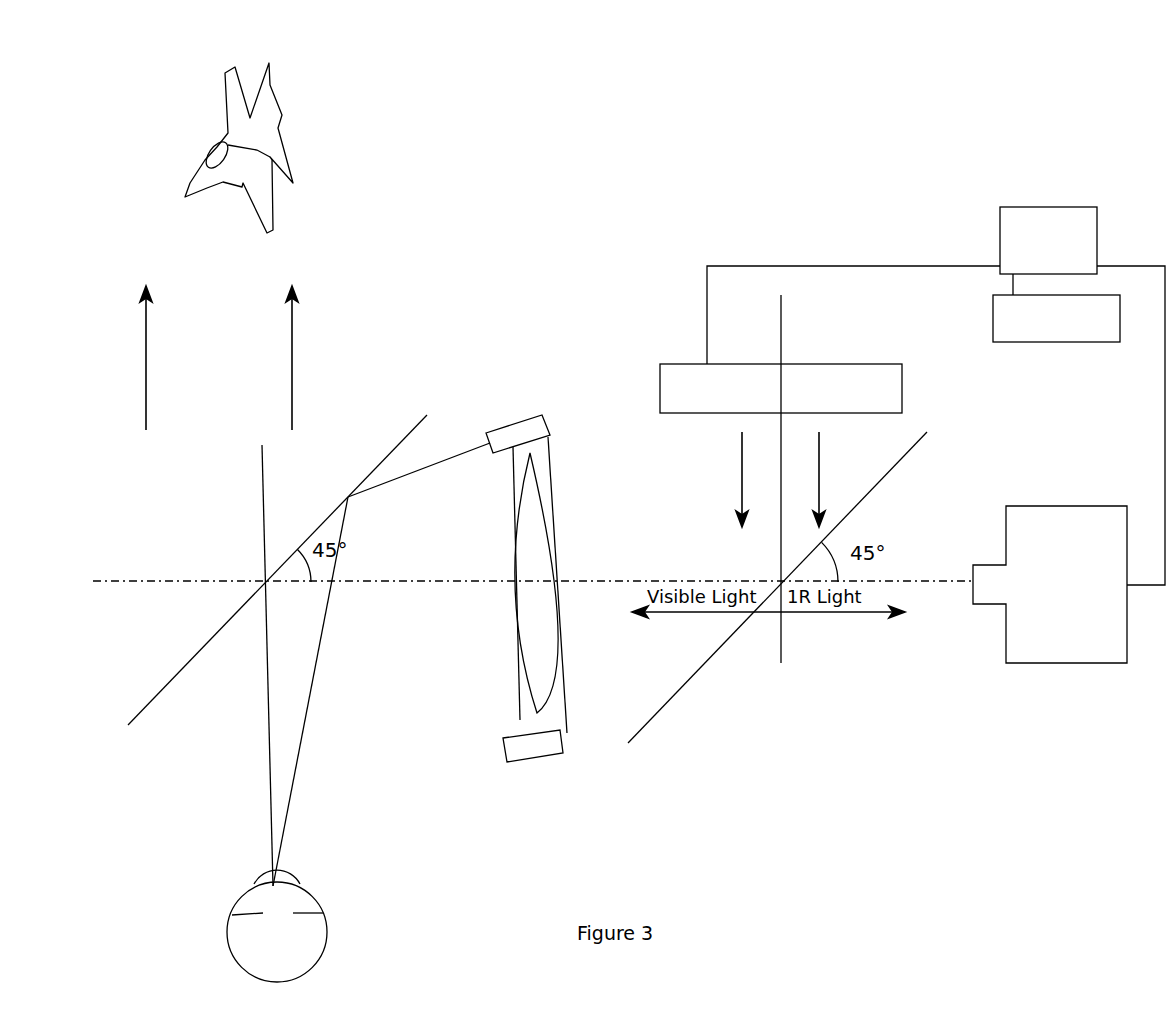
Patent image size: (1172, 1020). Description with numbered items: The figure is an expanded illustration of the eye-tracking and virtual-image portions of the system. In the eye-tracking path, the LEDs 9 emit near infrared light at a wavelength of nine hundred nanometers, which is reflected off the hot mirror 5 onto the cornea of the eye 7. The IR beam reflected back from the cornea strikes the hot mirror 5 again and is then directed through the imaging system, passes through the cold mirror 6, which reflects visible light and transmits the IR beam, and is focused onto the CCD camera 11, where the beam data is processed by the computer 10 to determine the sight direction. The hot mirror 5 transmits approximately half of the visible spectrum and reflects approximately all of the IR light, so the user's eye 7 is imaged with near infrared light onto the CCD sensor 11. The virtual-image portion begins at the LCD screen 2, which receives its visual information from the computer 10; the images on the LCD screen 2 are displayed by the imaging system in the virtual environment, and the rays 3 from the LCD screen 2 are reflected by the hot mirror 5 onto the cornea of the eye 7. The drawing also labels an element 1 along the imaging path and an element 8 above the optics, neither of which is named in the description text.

The lens 1 is at (558, 640).
The LCD screen 2 is at (897, 365).
The rays 3 is at (820, 475).
The hot mirror 5 is at (313, 533).
The cold mirror 6 is at (875, 490).
The eye 7 is at (322, 903).
The target object (aircraft) 8 is at (277, 117).
The LEDs 9 is at (547, 425).
The computer 10 is at (1048, 240).
The CCD camera 11 is at (1046, 513).